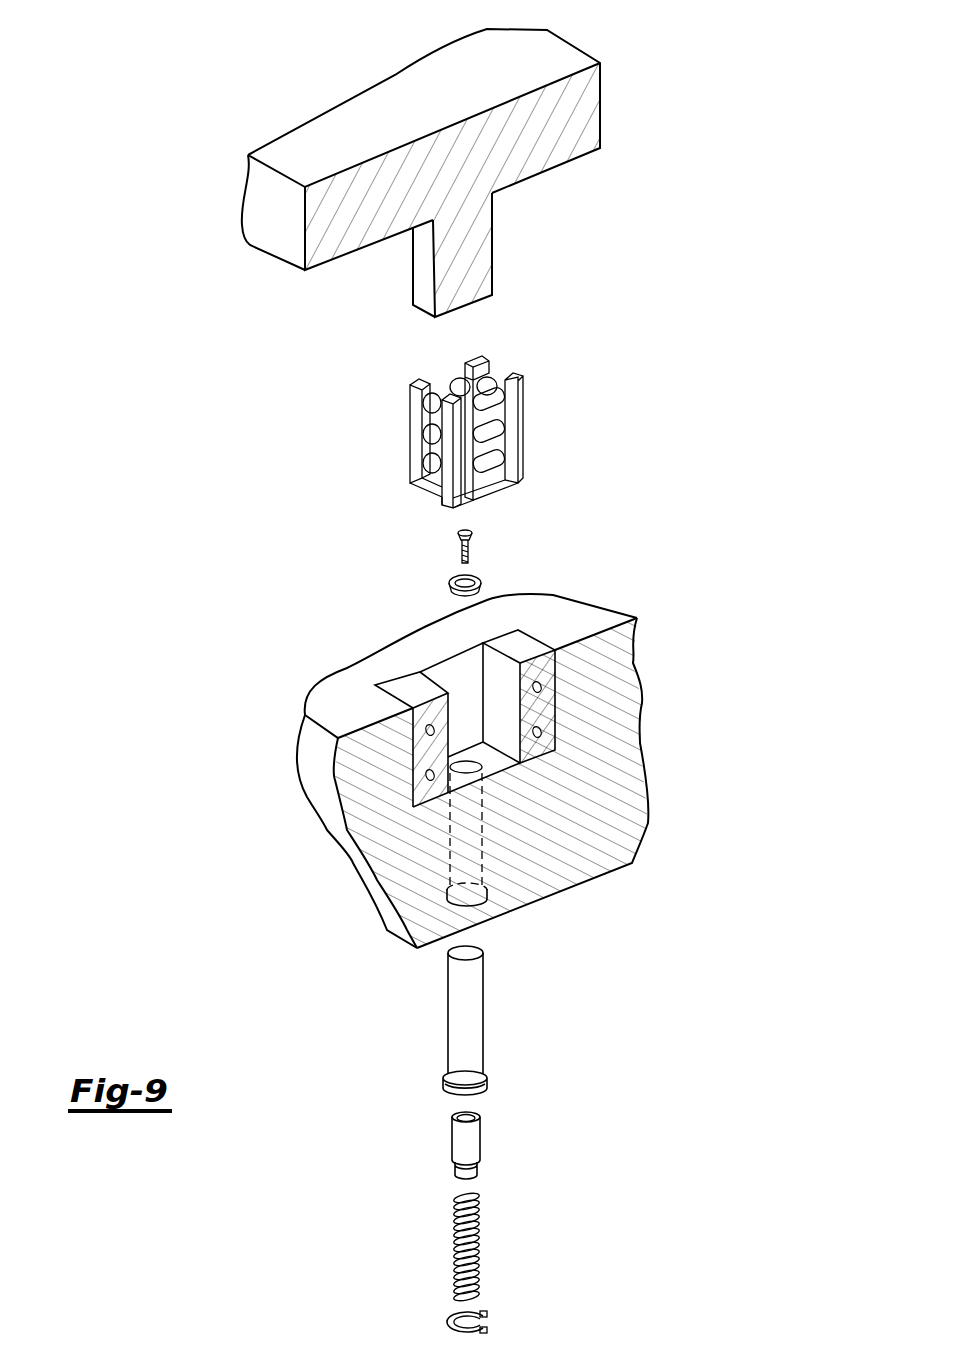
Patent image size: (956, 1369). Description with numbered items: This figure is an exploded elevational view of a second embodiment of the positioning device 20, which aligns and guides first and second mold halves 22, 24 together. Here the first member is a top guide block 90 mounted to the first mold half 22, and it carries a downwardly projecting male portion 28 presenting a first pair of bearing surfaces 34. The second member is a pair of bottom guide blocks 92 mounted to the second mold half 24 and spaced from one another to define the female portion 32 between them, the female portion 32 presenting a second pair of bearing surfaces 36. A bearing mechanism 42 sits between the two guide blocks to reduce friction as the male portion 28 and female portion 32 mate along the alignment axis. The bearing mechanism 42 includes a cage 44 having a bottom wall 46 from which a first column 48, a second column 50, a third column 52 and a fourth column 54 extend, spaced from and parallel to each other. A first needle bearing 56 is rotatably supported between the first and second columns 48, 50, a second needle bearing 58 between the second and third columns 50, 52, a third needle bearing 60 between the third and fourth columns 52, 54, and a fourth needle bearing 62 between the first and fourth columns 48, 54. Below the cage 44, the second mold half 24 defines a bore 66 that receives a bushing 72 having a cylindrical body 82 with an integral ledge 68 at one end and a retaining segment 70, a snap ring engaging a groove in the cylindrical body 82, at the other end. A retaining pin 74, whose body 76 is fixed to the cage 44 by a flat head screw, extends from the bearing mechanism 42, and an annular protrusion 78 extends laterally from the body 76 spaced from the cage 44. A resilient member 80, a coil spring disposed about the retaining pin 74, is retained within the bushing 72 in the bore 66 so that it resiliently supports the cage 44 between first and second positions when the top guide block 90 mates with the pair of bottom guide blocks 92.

The positioning device 20 is at (620, 291).
The first mold half 22 is at (563, 65).
The second mold half 24 is at (318, 785).
The male portion 28 is at (472, 273).
The female portion 32 is at (437, 672).
The first pair of bearing surfaces 34 is at (488, 246).
The second pair of bearing surfaces 36 is at (490, 694).
The bearing mechanism 42 is at (524, 342).
The cage 44 is at (516, 455).
The bottom wall 46 is at (490, 490).
The first column 48 is at (414, 402).
The second column 50 is at (481, 361).
The third column 52 is at (513, 398).
The fourth column 54 is at (455, 472).
The first needle bearing 56 is at (456, 385).
The second needle bearing 58 is at (487, 382).
The third needle bearing 60 is at (485, 405).
The fourth needle bearing 62 is at (430, 407).
The bore 66 is at (450, 860).
The ledge 68 is at (473, 950).
The retaining segment 70 is at (447, 1320).
The bushing 72 is at (460, 1040).
The retaining pin 74 is at (452, 1142).
The body 76 is at (470, 1137).
The protrusion 78 is at (478, 1158).
The resilient member 80 is at (478, 1239).
The cylindrical body 82 is at (449, 1004).
The top guide block 90 is at (423, 272).
The bottom guide blocks 92 is at (402, 690).